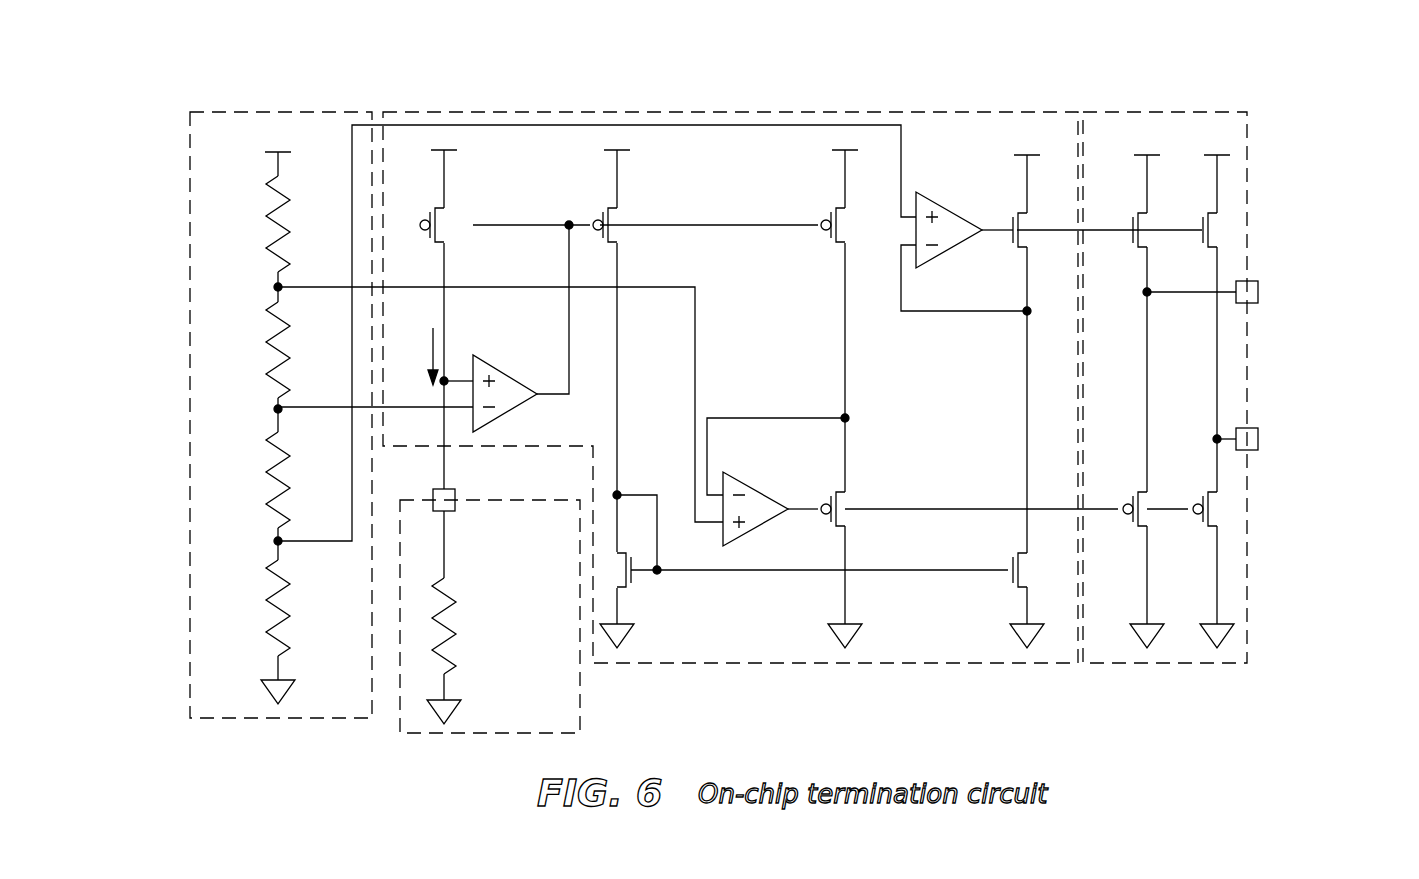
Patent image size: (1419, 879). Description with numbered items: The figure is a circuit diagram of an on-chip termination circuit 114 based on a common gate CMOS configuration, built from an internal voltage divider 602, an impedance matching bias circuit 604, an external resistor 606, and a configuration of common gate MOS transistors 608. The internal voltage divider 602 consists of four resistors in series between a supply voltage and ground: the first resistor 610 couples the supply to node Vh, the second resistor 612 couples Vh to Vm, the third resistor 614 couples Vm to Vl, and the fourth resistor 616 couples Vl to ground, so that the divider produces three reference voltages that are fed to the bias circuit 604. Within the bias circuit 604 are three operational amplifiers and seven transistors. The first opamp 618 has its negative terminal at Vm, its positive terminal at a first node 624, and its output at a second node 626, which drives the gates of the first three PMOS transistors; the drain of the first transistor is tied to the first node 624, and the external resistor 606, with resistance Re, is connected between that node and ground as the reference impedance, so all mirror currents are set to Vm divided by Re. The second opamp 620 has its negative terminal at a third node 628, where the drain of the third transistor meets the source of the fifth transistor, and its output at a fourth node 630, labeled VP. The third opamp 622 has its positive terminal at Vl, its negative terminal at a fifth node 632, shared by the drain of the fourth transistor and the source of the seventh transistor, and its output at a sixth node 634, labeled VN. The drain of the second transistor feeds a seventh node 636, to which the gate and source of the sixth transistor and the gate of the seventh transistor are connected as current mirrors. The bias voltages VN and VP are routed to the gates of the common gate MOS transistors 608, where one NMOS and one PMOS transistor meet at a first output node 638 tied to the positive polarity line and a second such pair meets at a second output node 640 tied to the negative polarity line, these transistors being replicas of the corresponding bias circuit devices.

The on-chip termination circuit 114 is at (958, 746).
The internal voltage divider 602 is at (189, 125).
The impedance matching bias circuit 604 is at (1027, 110).
The external resistor 606 is at (497, 500).
The common gate MOS transistors 608 is at (1252, 132).
The first resistor 610 is at (269, 191).
The second resistor 612 is at (269, 324).
The third resistor 614 is at (269, 449).
The fourth resistor 616 is at (269, 575).
The first opamp 618 is at (524, 378).
The second opamp 620 is at (754, 488).
The third opamp 622 is at (942, 250).
The first node 624 is at (446, 338).
The second node 626 is at (532, 224).
The third node 628 is at (776, 418).
The fourth node 630 is at (920, 509).
The fifth node 632 is at (960, 313).
The sixth node 634 is at (986, 218).
The seventh node 636 is at (618, 356).
The first output node 638 is at (1146, 330).
The second output node 640 is at (1216, 330).